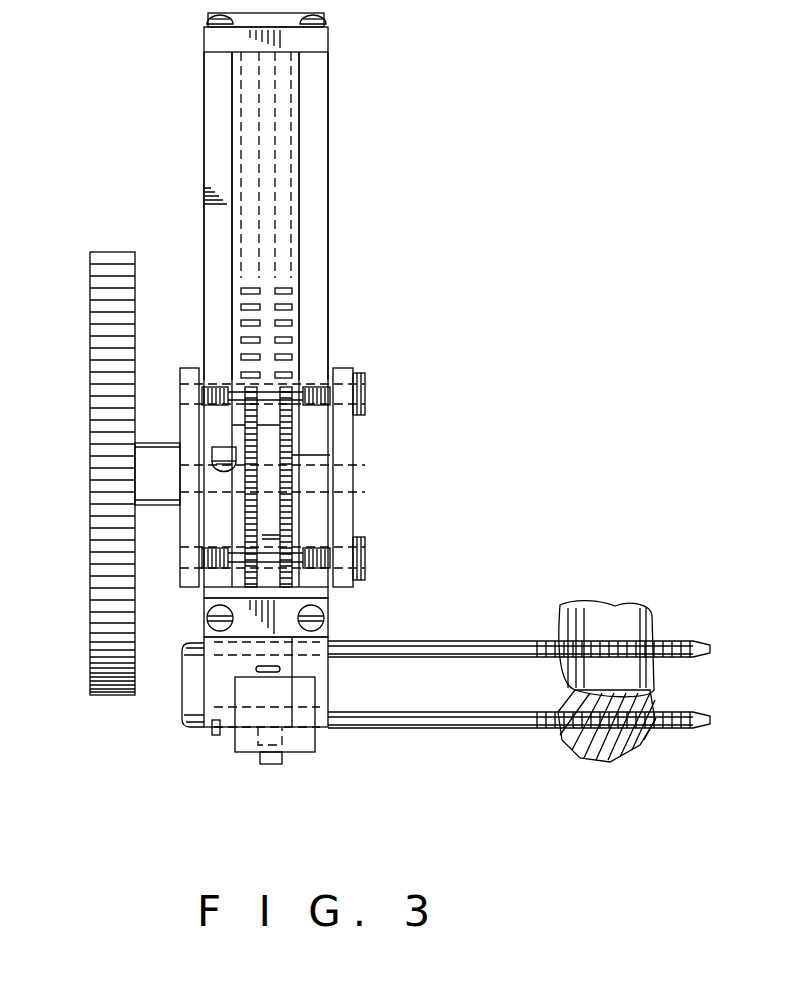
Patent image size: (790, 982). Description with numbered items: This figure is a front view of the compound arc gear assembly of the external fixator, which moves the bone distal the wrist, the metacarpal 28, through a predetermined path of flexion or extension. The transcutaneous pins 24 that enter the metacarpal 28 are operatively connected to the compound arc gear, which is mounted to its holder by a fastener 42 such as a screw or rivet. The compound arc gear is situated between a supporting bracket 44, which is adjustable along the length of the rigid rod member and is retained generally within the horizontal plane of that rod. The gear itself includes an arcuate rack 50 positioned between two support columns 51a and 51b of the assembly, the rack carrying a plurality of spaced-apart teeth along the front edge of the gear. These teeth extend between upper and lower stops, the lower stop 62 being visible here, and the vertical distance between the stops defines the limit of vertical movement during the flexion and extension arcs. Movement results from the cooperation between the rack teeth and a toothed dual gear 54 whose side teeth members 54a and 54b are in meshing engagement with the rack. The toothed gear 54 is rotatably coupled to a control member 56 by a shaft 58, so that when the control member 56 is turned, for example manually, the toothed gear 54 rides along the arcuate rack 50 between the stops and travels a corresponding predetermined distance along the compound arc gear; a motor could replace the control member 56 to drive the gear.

The transcutaneous pins 24 is at (515, 650).
The metacarpal 28 is at (600, 615).
The fastener 42 is at (186, 694).
The supporting bracket 44 is at (340, 368).
The arcuate rack 50 is at (292, 324).
The support column 51a is at (215, 110).
The support column 51b is at (318, 108).
The toothed gear 54 is at (287, 458).
The side teeth member 54a is at (245, 400).
The side teeth member 54b is at (285, 523).
The control member 56 is at (105, 332).
The shaft 58 is at (152, 495).
The lower stop 62 is at (325, 613).